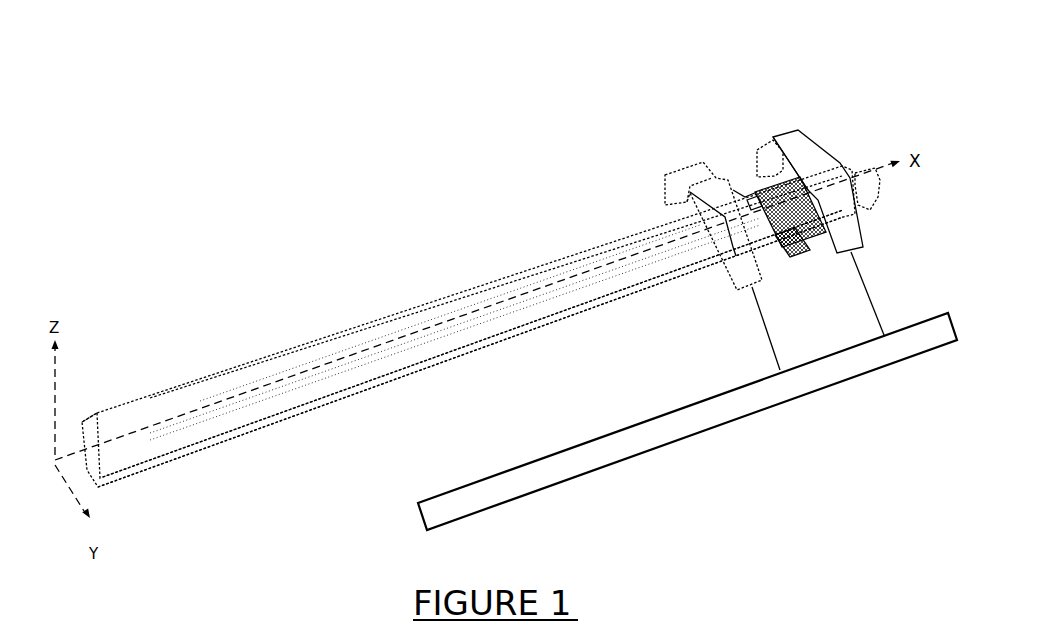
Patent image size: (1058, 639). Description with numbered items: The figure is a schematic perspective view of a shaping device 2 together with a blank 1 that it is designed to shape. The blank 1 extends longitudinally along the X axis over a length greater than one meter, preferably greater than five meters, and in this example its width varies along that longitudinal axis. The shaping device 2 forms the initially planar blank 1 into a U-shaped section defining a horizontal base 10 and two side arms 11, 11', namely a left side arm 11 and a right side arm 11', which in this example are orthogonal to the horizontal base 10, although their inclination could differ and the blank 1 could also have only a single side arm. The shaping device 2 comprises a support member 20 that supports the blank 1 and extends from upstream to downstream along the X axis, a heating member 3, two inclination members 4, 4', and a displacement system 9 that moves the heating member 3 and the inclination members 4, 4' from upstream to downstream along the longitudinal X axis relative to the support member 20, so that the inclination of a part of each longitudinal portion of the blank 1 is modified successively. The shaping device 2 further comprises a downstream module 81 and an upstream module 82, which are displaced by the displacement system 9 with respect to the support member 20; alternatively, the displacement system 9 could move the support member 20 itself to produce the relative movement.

The blank 1 is at (464, 313).
The shaping device 2 is at (413, 108).
The heating member 3 is at (770, 183).
The inclination member 4 is at (744, 164).
The inclination member 4' is at (800, 271).
The displacement system 9 is at (758, 412).
The horizontal base 10 is at (135, 415).
The left side arm 11 is at (481, 308).
The right side arm 11' is at (473, 368).
The support member 20 is at (445, 360).
The downstream module 81 is at (821, 114).
The upstream module 82 is at (693, 220).